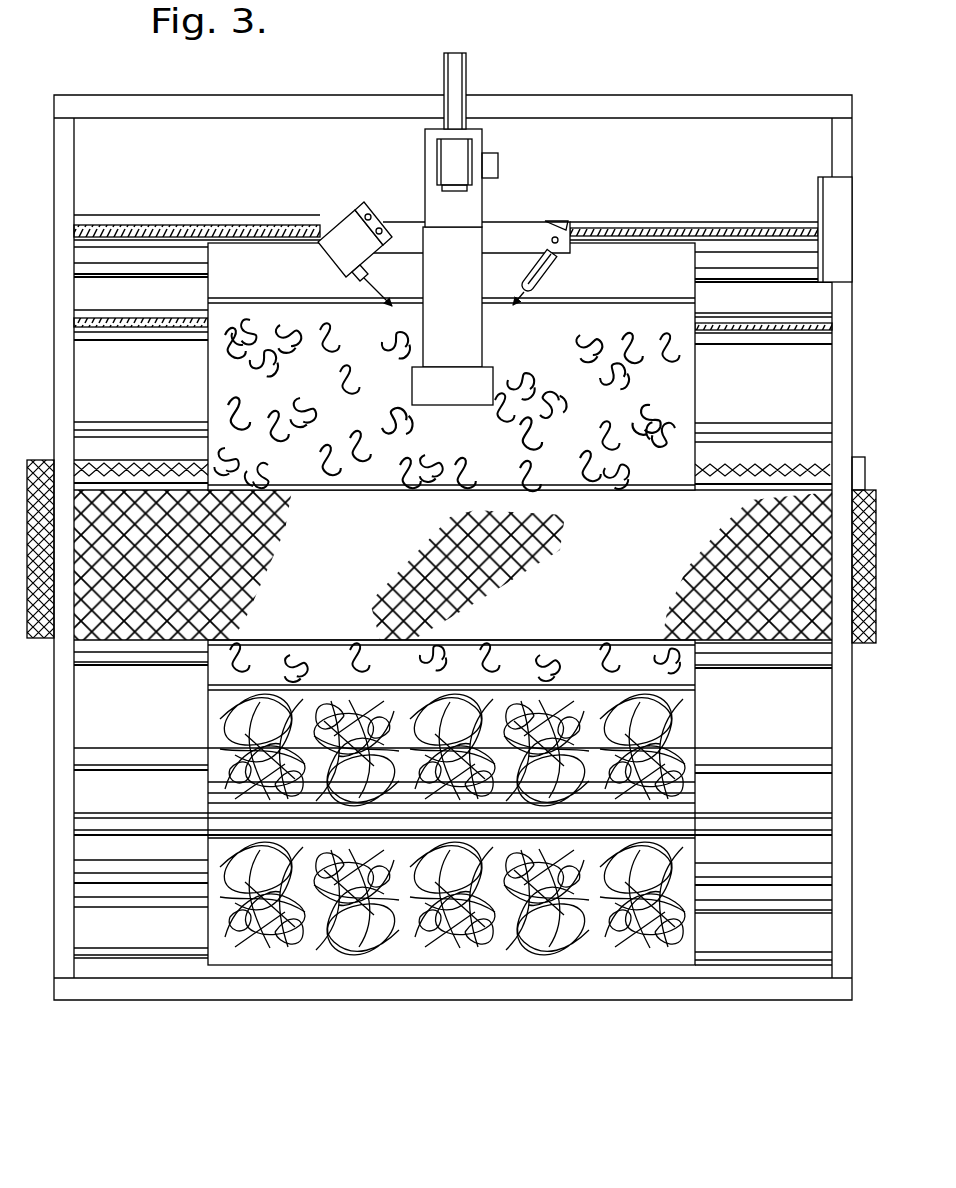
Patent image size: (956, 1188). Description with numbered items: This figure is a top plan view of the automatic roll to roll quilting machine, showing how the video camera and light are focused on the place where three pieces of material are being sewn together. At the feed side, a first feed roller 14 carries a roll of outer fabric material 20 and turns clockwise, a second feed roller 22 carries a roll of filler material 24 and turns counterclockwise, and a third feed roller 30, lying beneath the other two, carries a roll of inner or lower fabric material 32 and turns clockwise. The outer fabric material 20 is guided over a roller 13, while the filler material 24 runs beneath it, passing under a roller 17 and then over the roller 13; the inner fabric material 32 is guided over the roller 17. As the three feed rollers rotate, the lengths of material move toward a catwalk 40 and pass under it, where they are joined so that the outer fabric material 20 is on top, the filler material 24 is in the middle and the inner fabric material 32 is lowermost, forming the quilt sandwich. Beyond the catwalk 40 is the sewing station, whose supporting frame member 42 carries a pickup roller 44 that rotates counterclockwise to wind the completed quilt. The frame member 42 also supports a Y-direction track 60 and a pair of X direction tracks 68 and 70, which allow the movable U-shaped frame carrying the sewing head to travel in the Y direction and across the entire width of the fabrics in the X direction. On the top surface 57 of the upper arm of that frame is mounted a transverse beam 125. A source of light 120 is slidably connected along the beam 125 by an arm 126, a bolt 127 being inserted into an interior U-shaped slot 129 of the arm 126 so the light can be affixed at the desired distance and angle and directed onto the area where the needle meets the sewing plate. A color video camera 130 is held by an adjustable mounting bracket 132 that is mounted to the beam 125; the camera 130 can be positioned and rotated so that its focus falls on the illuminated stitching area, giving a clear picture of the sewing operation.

The roller 13 is at (133, 958).
The first feed roller 14 is at (176, 905).
The roller 17 is at (191, 826).
The outer fabric material 20 is at (416, 342).
The second feed roller 22 is at (118, 757).
The filler material 24 is at (675, 737).
The third feed roller 30 is at (735, 880).
The inner or lower fabric material 32 is at (402, 385).
The catwalk 40 is at (331, 582).
The supporting frame member 42 is at (830, 205).
The pickup roller 44 is at (127, 277).
The top surface 57 is at (470, 208).
The Y-direction track 60 is at (468, 75).
The X direction track 68 is at (144, 340).
The X direction track 70 is at (132, 215).
The source of light 120 is at (511, 318).
The transverse beam 125 is at (475, 250).
The arm 126 is at (565, 258).
The bolt 127 is at (568, 227).
The interior U-shaped slot 129 is at (553, 238).
The color video camera 130 is at (340, 222).
The adjustable mounting bracket 132 is at (362, 215).